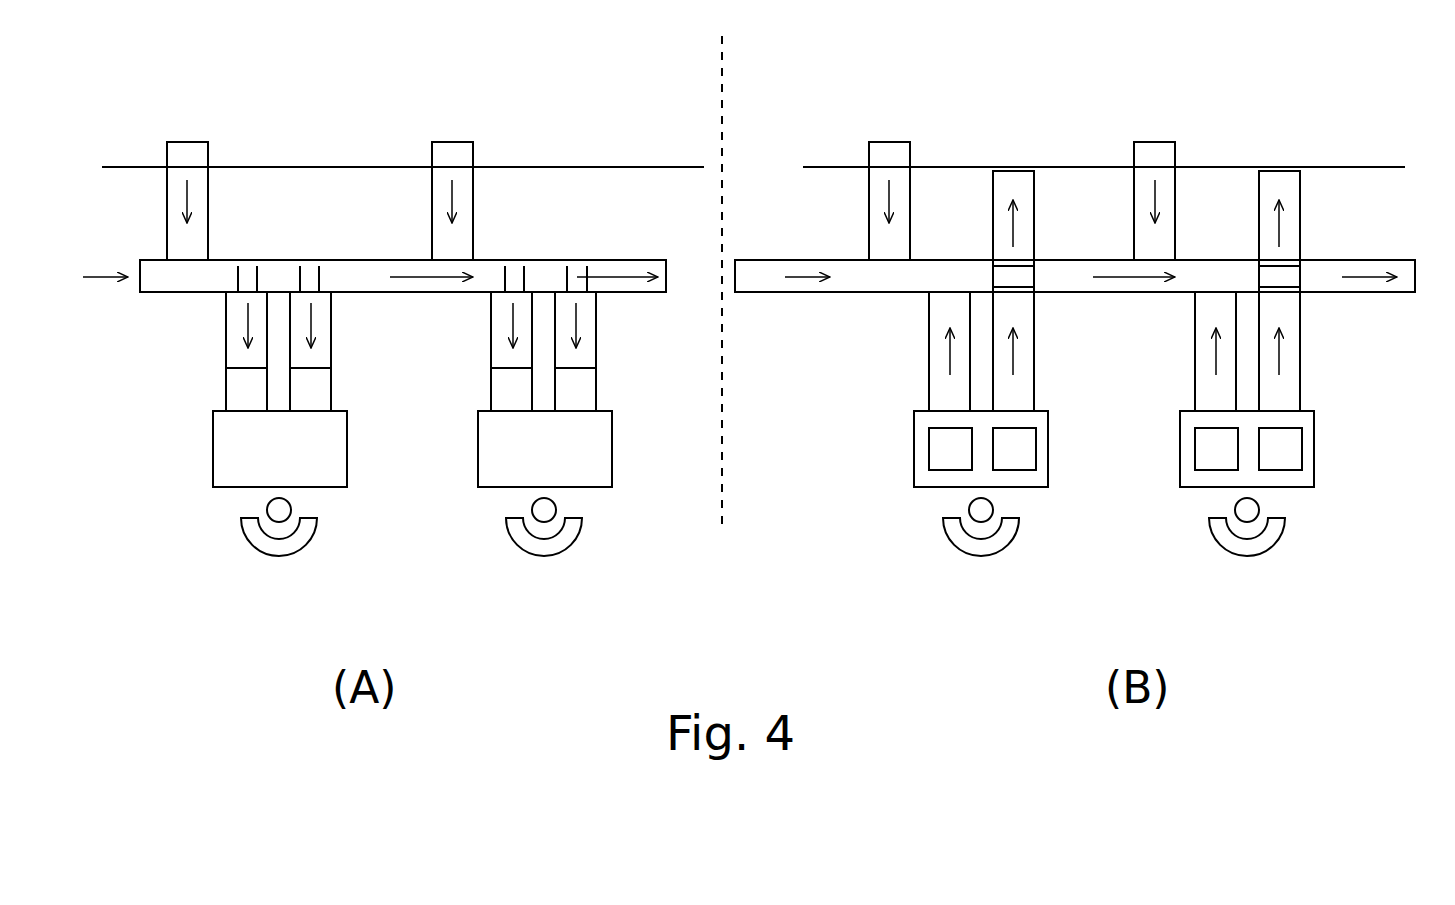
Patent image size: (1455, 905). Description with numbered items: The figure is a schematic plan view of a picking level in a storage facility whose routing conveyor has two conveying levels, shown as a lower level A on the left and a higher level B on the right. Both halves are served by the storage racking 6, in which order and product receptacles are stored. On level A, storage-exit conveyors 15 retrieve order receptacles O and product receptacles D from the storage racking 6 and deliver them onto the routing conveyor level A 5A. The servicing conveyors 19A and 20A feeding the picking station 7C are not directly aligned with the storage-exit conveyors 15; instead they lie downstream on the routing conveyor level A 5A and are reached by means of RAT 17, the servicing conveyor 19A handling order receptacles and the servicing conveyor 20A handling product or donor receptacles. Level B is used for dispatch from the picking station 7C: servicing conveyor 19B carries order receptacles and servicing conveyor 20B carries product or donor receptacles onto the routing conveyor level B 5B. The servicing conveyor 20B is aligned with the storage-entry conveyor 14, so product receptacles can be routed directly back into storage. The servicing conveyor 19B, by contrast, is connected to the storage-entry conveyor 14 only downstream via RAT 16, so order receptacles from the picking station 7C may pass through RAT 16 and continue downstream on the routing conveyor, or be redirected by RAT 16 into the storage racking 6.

The storage racking 6 is at (333, 66).
The storage-exit conveyor 15 is at (188, 157).
The storage-entry conveyor 14 is at (1013, 183).
The RAT 17 is at (247, 277).
The RAT 16 is at (1013, 277).
The routing conveyor level A 5A is at (155, 280).
The routing conveyor level B 5B is at (1407, 273).
The servicing conveyor 19A is at (247, 357).
The servicing conveyor 20A is at (311, 357).
The servicing conveyor 19B is at (948, 388).
The servicing conveyor 20B is at (1013, 388).
The picking station 7C is at (353, 502).